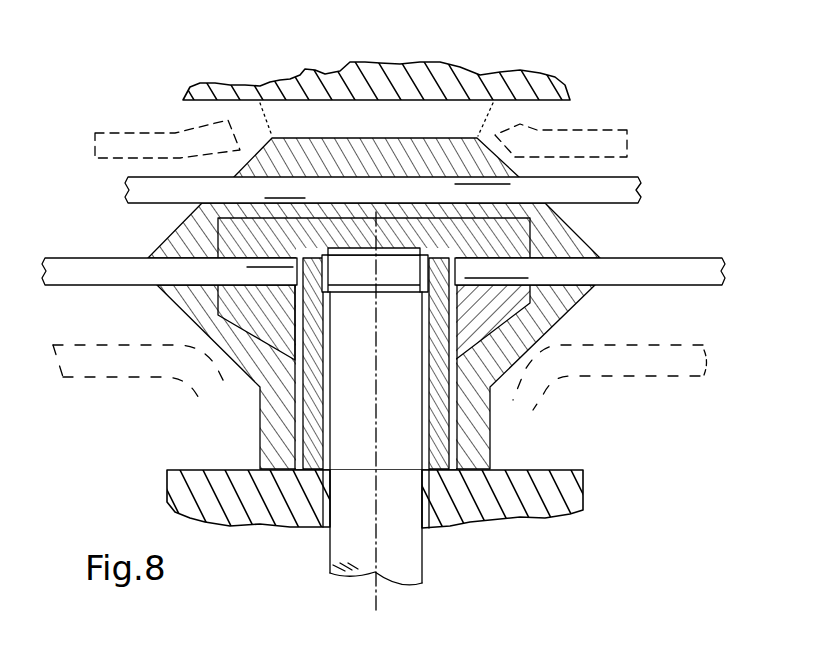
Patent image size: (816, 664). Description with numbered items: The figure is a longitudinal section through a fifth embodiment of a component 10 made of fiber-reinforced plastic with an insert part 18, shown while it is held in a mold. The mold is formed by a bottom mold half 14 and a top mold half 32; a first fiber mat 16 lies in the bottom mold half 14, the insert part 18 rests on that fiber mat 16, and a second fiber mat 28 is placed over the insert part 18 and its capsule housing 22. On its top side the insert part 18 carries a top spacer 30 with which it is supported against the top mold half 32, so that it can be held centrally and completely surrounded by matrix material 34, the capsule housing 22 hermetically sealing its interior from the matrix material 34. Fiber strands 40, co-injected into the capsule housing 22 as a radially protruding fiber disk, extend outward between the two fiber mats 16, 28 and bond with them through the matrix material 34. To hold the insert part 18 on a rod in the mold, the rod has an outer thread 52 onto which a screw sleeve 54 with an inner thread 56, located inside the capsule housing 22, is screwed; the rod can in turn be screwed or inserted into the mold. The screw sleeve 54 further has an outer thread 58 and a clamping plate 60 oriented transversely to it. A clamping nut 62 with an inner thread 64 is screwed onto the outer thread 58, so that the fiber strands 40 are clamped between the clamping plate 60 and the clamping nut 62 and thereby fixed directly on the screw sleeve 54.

The component 10 is at (168, 112).
The bottom mold half 14 is at (550, 510).
The first fiber mat 16 is at (63, 378).
The insert part 18 is at (136, 242).
The capsule housing 22 is at (265, 405).
The second fiber mat 28 is at (107, 143).
The top spacer 30 is at (465, 112).
The top mold half 32 is at (550, 76).
The matrix material 34 is at (110, 429).
The fiber strands 40 is at (628, 188).
The outer thread 52 is at (425, 548).
The screw sleeve 54 is at (457, 441).
The inner thread 56 is at (427, 398).
The outer thread 58 is at (457, 423).
The clamping plate 60 is at (530, 238).
The clamping nut 62 is at (532, 323).
The inner thread 64 is at (450, 318).